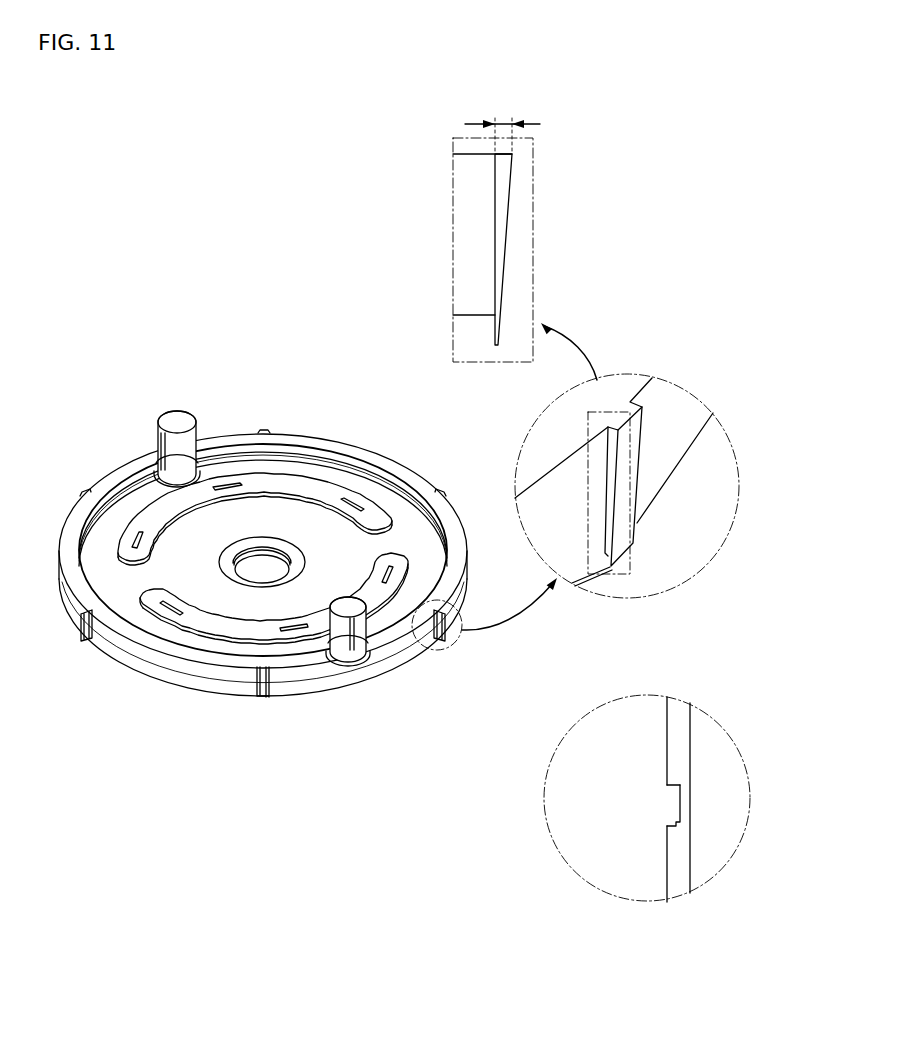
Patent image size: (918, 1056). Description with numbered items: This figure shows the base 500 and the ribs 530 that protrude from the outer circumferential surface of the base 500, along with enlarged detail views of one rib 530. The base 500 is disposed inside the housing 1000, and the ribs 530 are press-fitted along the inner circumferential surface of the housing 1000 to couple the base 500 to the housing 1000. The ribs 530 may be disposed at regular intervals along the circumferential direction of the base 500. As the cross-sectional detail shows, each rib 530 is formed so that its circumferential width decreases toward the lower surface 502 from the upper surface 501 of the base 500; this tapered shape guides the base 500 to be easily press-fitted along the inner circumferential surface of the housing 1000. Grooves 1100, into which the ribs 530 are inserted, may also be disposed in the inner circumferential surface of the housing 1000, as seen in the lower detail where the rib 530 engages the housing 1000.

The base 500 is at (575, 798).
The upper surface 501 is at (470, 154).
The lower surface 502 is at (470, 316).
The rib 530 is at (502, 180).
The housing 1000 is at (694, 857).
The grooves 1100 is at (680, 793).